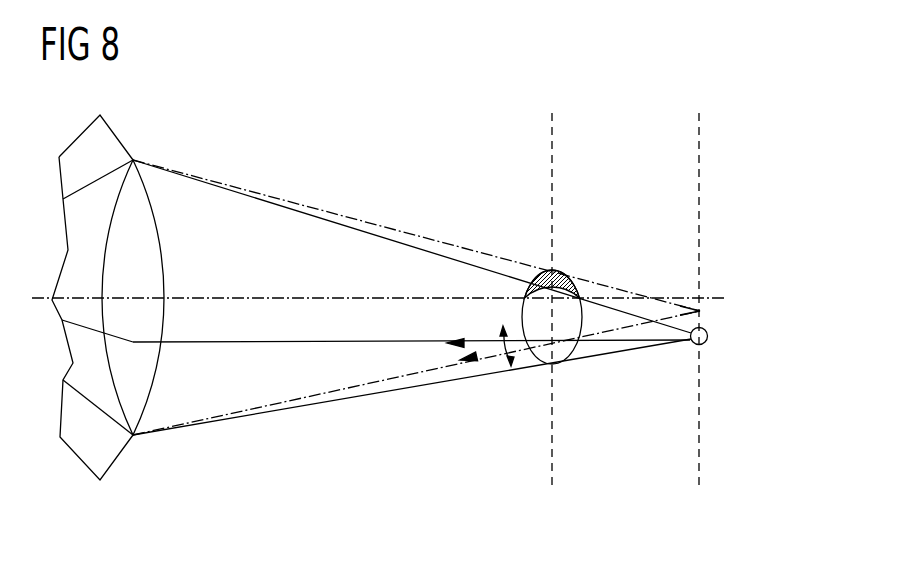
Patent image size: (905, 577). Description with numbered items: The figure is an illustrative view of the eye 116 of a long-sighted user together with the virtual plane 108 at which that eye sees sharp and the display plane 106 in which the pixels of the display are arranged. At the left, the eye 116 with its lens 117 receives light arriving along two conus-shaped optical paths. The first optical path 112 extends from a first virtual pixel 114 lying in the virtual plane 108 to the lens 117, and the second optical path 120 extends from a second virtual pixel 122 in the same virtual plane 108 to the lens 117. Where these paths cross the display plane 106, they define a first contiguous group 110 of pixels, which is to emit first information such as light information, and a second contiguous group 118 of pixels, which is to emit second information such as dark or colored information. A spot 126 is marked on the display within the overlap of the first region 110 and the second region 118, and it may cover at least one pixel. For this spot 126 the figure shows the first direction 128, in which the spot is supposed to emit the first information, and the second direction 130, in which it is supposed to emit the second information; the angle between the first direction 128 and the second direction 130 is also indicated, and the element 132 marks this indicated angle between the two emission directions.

The display plane 106 is at (552, 457).
The virtual plane 108 is at (699, 440).
The first contiguous group of pixels 110 is at (561, 364).
The first optical path 112 is at (668, 348).
The first virtual pixel 114 is at (708, 338).
The eye 116 is at (118, 132).
The lens 117 is at (158, 241).
The second contiguous group of pixels 118 is at (563, 270).
The second optical path 120 is at (623, 292).
The second virtual pixel 122 is at (700, 311).
The spot 126 is at (599, 353).
The first direction 128 is at (482, 338).
The second direction 130 is at (483, 358).
The displacement arrow 132 is at (505, 368).